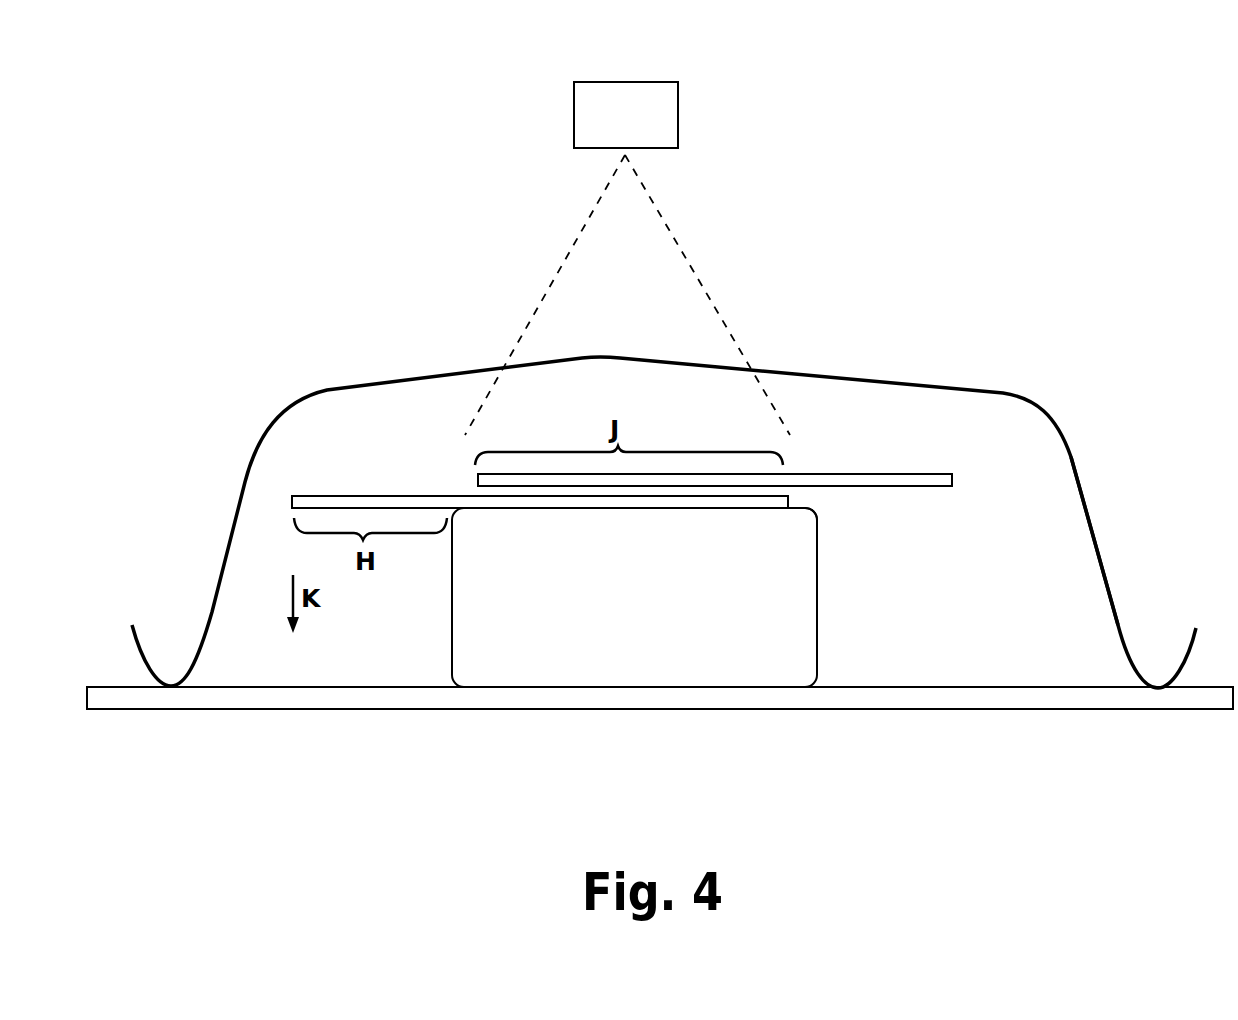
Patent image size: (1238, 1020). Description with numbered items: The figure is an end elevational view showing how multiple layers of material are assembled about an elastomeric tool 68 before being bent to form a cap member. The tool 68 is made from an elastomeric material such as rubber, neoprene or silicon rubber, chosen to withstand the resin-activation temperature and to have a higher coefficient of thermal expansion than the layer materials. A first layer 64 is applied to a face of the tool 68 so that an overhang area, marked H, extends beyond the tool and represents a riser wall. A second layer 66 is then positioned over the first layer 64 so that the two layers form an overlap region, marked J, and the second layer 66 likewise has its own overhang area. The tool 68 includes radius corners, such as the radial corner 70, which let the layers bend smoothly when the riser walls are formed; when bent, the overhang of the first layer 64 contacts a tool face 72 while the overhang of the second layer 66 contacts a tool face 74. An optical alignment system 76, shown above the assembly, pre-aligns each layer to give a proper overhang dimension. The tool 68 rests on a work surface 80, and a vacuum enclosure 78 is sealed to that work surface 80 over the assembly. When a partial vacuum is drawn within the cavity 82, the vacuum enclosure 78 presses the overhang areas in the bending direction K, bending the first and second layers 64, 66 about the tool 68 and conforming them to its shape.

The first layer 64 is at (390, 495).
The second layer 66 is at (887, 473).
The tool 68 is at (783, 625).
The radial corner 70 is at (804, 499).
The tool face 72 is at (452, 625).
The tool face 74 is at (818, 578).
The optical alignment system 76 is at (678, 100).
The vacuum enclosure 78 is at (267, 430).
The work surface 80 is at (928, 705).
The cavity 82 is at (1082, 538).